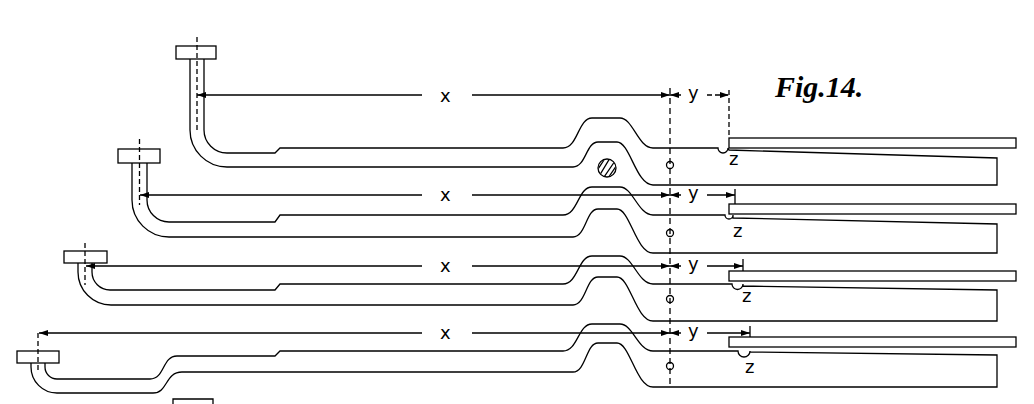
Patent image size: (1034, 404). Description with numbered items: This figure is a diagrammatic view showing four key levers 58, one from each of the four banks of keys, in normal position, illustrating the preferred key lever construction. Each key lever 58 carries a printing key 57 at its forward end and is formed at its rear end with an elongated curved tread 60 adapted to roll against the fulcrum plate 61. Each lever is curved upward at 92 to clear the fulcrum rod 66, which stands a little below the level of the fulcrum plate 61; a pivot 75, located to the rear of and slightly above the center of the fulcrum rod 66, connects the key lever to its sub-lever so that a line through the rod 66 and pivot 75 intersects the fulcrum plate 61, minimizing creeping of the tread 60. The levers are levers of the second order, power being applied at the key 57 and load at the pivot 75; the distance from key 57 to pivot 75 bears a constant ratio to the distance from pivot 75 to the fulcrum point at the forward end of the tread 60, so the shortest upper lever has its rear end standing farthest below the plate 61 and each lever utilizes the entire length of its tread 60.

The printing key 57 is at (216, 52).
The key lever 58 is at (534, 150).
The elongated curved tread 60 is at (897, 154).
The fulcrum plate 61 is at (904, 138).
The fulcrum rod 66 is at (597, 171).
The pivot 75 is at (674, 166).
The upward curve of key lever 92 is at (613, 120).